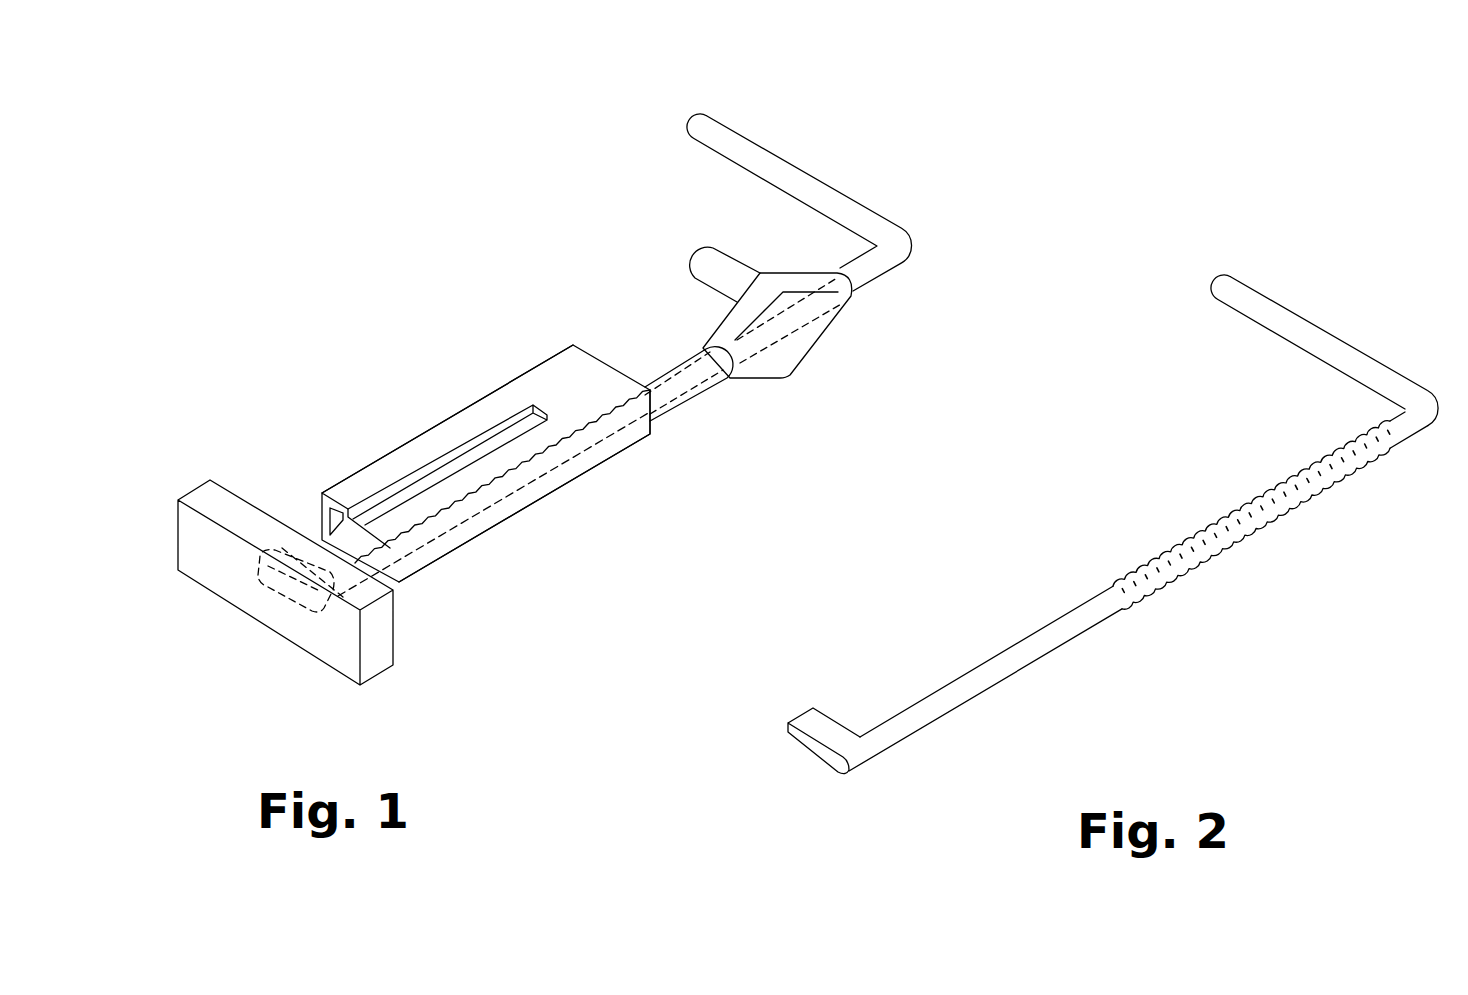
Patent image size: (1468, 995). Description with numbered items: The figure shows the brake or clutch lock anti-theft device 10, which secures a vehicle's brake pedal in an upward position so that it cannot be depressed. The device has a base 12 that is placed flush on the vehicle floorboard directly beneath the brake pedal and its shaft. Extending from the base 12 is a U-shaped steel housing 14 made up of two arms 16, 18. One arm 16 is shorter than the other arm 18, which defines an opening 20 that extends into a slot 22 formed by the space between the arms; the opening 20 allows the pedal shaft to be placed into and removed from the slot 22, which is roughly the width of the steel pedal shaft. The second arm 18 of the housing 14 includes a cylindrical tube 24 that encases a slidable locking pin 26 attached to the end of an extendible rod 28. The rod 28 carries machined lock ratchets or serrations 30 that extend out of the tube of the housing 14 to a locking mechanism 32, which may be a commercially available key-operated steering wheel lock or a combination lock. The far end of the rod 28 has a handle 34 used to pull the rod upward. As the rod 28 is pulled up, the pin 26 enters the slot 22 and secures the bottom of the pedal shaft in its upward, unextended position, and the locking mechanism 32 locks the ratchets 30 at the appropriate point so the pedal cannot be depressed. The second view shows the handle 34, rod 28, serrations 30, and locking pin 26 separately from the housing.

In FIG. 1, the brake or clutch lock anti-theft device 10 is at (470, 262).
In FIG. 1, the base 12 is at (215, 488).
In FIG. 1, the U-shaped steel housing 14 is at (538, 357).
In FIG. 1, the arm 16 is at (465, 405).
In FIG. 1, the arm 18 is at (558, 485).
In FIG. 1, the opening 20 is at (321, 523).
In FIG. 1, the slot 22 is at (440, 460).
In FIG. 1, the cylindrical tube 24 is at (692, 402).
In FIG. 1, the slidable locking pin 26 is at (275, 600).
In FIG. 2, the slidable locking pin 26 is at (808, 745).
In FIG. 2, the extendible rod 28 is at (1102, 618).
In FIG. 2, the lock ratchets or serrations 30 is at (1240, 547).
In FIG. 1, the locking mechanism 32 is at (793, 357).
In FIG. 1, the handle 34 is at (765, 160).
In FIG. 2, the handle 34 is at (1297, 318).